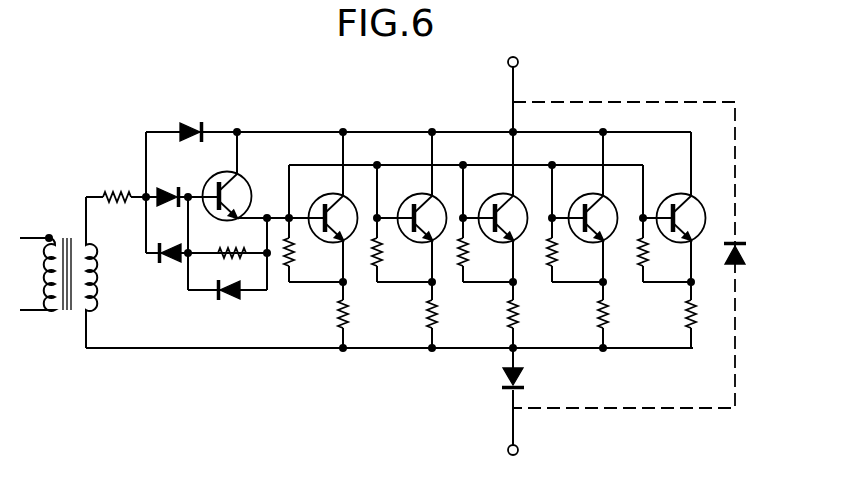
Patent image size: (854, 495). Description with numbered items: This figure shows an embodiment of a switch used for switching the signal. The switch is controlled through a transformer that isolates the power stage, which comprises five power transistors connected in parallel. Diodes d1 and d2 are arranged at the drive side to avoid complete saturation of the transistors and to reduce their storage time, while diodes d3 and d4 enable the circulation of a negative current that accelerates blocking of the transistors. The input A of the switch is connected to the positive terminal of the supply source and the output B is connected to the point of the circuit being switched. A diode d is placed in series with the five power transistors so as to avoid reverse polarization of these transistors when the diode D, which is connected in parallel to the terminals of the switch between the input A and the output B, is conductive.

The diode d1 is at (168, 190).
The diode d2 is at (184, 125).
The diode d3 is at (172, 263).
The diode d4 is at (234, 300).
The diode d is at (505, 383).
The diode D is at (732, 272).
The input A is at (508, 62).
The output B is at (508, 450).